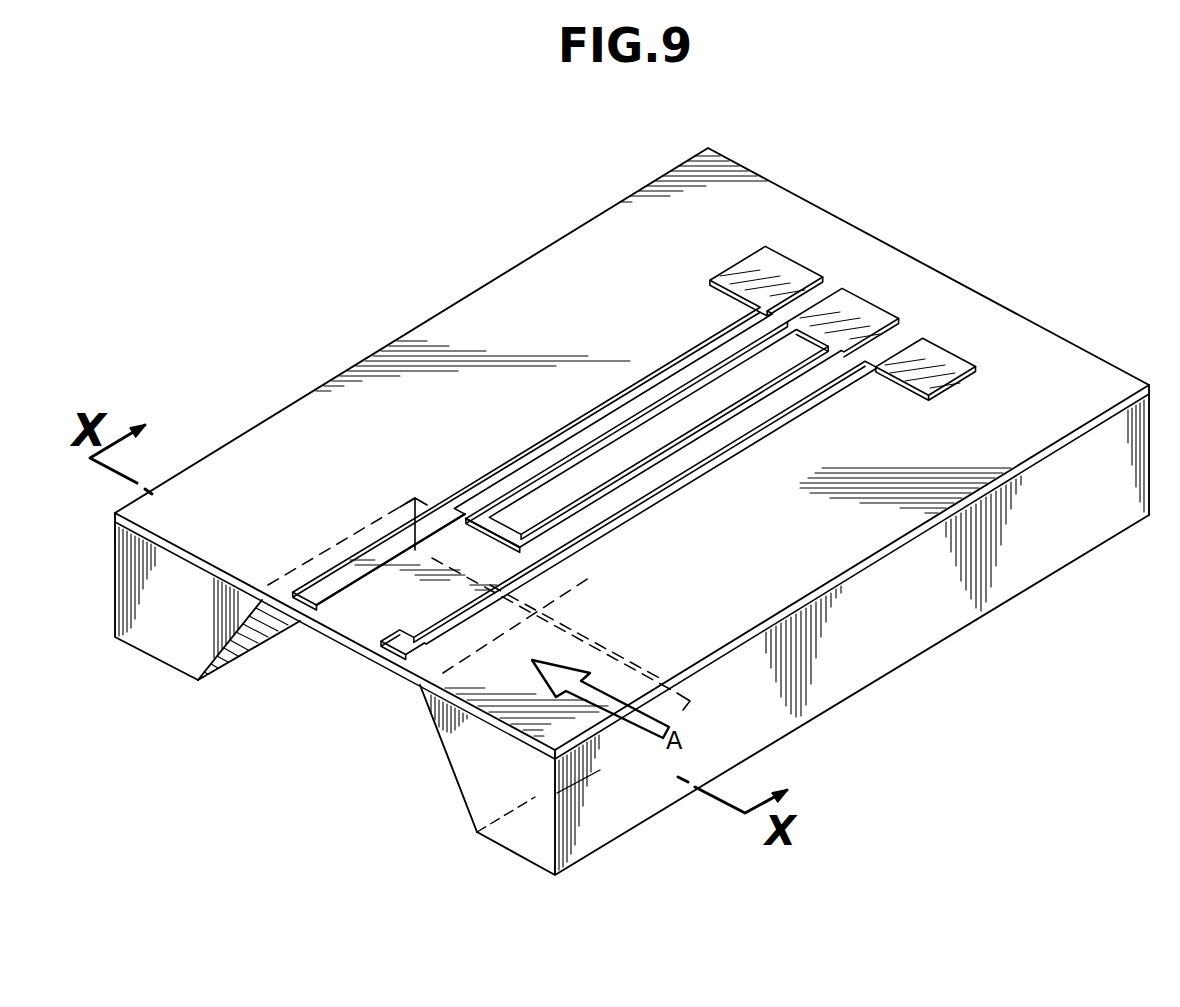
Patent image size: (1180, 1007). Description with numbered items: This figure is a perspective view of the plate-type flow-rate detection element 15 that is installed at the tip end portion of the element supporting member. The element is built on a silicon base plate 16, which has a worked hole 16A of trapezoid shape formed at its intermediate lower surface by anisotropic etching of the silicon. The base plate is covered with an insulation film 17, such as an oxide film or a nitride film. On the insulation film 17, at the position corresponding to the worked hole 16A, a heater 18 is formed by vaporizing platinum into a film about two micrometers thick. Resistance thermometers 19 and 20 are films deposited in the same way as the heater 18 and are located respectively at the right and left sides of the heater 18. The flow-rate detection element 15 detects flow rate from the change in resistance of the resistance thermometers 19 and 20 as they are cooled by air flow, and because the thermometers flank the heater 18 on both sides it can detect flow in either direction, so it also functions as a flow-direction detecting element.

The plate-type flow-rate detection element 15 is at (421, 324).
The silicon base plate 16 is at (946, 613).
The worked hole 16A is at (450, 767).
The insulation film 17 is at (1075, 365).
The heater 18 is at (367, 613).
The resistance thermometer 19 is at (412, 637).
The resistance thermometer 20 is at (378, 543).